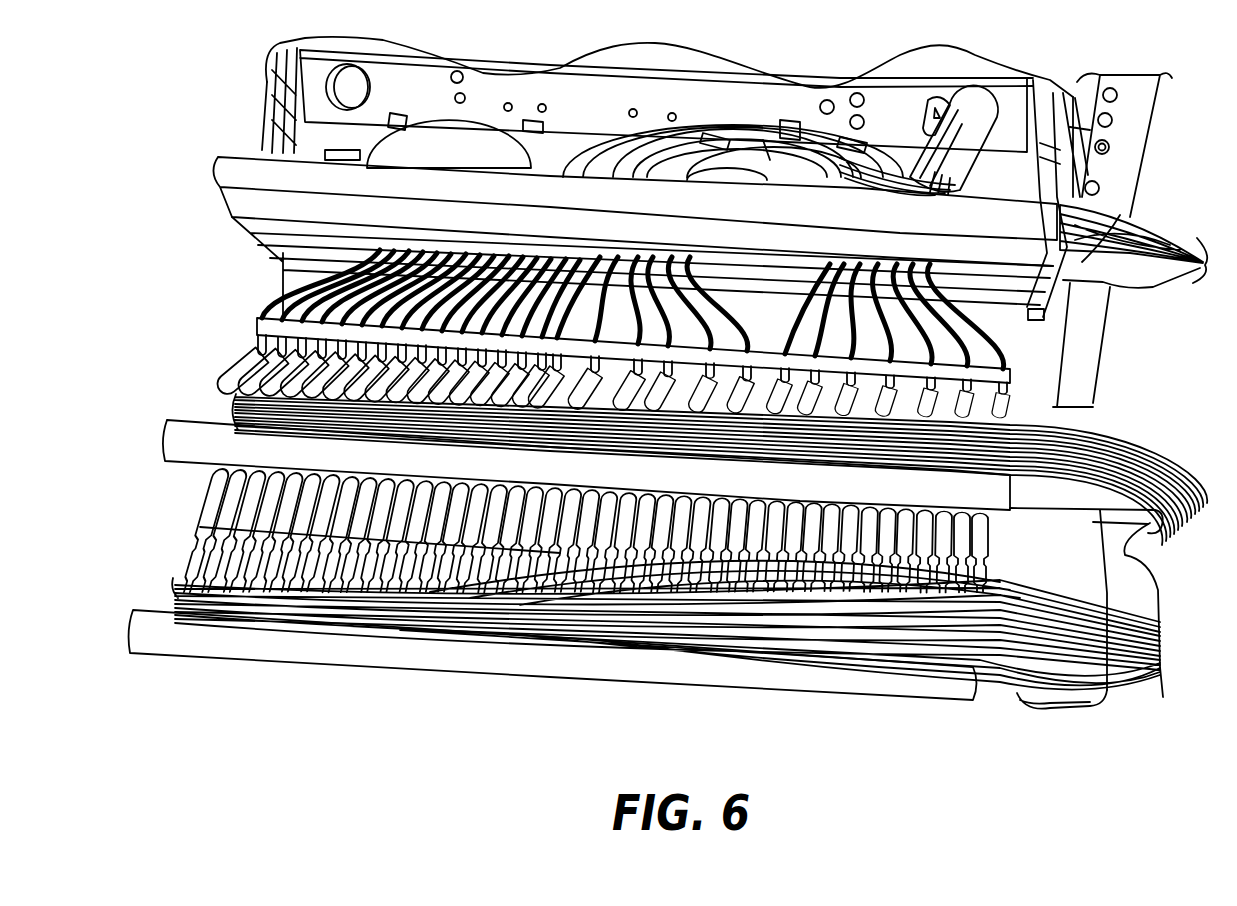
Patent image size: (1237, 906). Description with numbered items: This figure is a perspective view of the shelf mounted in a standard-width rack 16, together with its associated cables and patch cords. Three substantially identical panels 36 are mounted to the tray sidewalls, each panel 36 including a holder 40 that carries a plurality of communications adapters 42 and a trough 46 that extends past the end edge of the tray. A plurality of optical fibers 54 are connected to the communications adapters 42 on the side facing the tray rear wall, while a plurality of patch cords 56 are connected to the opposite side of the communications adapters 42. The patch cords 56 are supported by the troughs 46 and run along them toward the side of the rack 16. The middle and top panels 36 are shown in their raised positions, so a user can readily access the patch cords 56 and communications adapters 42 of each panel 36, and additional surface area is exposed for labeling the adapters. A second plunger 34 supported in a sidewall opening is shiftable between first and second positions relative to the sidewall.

The rack 16 is at (1153, 122).
The second plunger 34 is at (1045, 316).
The panel 36 is at (1087, 262).
The holder 40 is at (255, 323).
The communications adapters 42 is at (258, 347).
The trough 46 is at (222, 198).
The optical fibers 54 is at (283, 297).
The patch cords 56 is at (1150, 230).